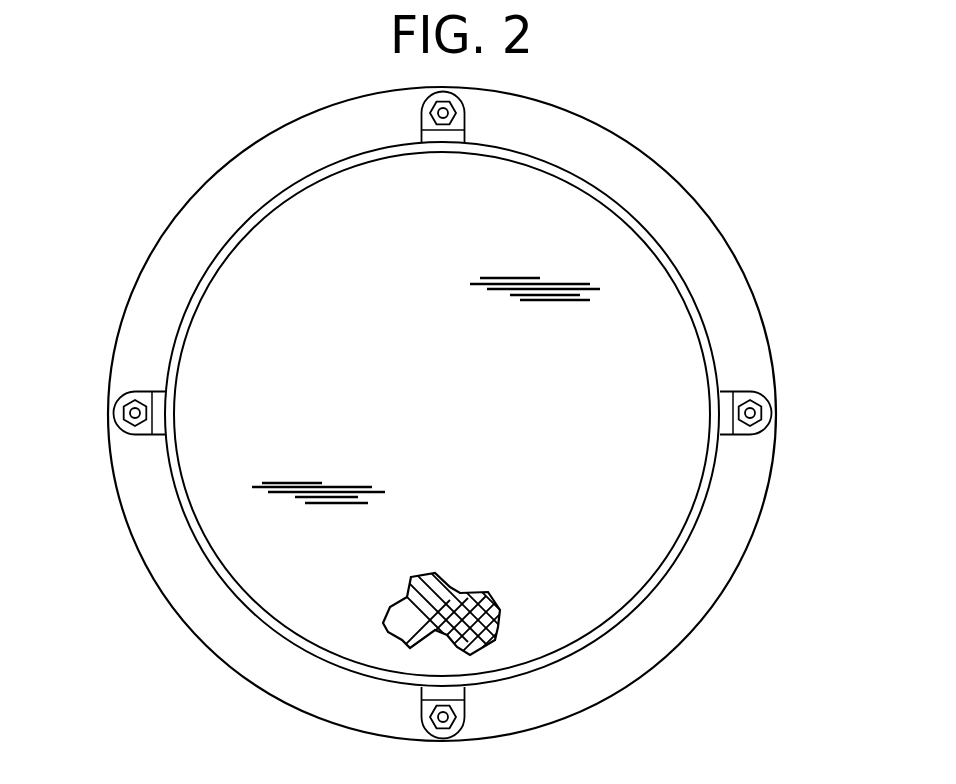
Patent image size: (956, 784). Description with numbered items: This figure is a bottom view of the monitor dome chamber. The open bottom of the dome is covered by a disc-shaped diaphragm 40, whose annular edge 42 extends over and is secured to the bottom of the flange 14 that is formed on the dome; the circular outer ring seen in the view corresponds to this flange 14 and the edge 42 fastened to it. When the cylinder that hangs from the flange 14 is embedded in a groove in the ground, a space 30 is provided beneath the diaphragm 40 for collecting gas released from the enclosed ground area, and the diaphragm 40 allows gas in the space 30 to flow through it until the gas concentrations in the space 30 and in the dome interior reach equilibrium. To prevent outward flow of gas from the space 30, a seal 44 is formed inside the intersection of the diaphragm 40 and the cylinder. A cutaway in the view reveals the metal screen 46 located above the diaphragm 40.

The flange 14 is at (212, 177).
The annular edge 42 is at (633, 170).
The diaphragm 40 is at (590, 248).
The seal 44 is at (178, 447).
The metal screen 46 is at (450, 582).
The space 30 is at (628, 531).